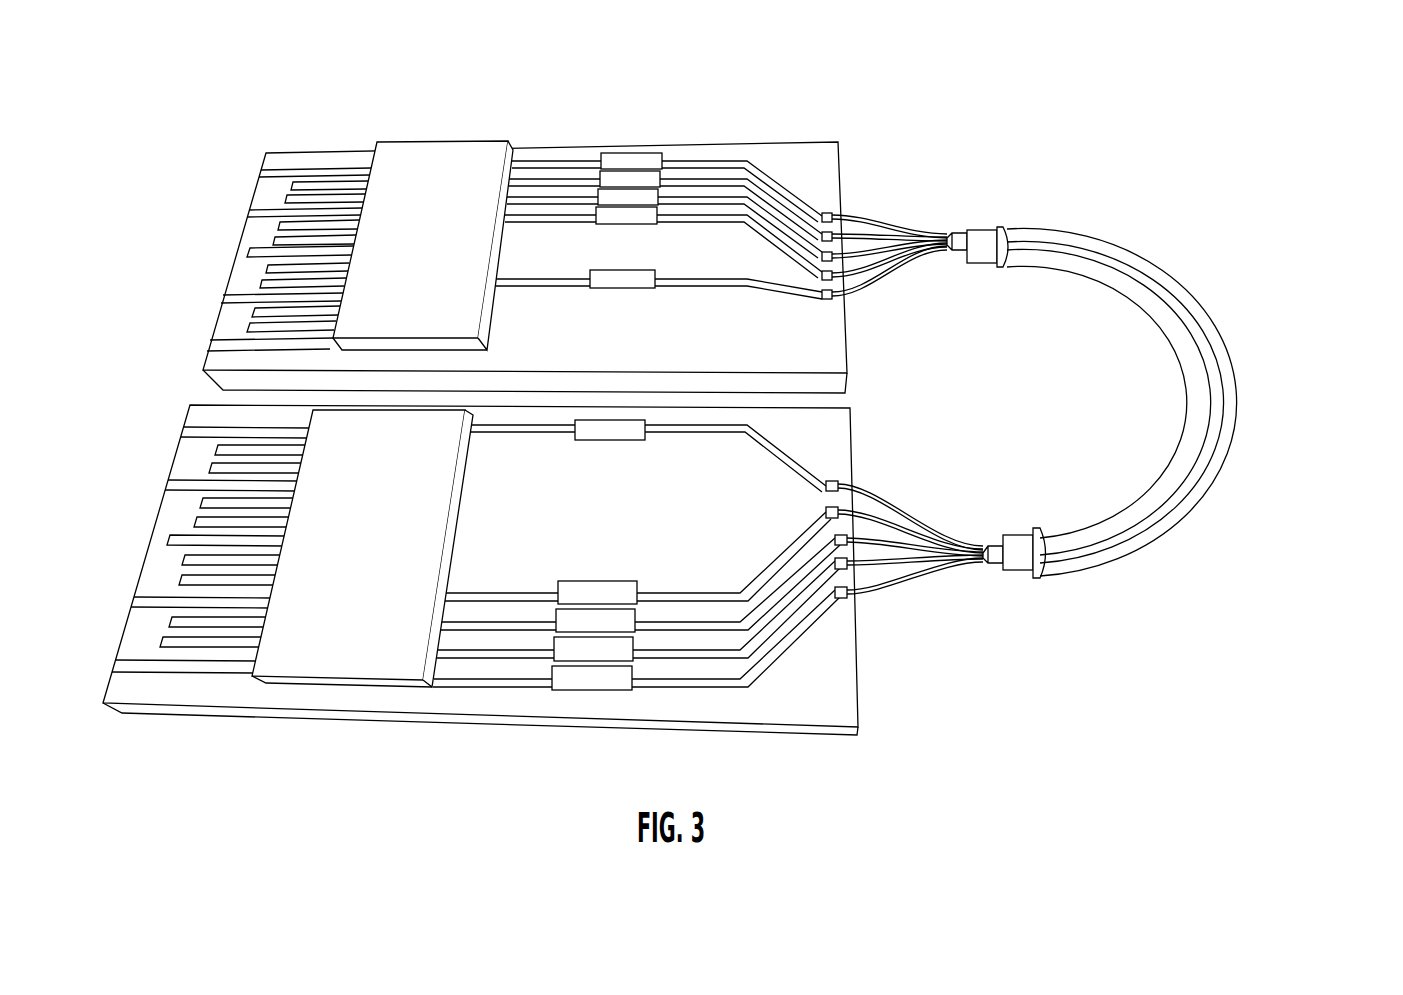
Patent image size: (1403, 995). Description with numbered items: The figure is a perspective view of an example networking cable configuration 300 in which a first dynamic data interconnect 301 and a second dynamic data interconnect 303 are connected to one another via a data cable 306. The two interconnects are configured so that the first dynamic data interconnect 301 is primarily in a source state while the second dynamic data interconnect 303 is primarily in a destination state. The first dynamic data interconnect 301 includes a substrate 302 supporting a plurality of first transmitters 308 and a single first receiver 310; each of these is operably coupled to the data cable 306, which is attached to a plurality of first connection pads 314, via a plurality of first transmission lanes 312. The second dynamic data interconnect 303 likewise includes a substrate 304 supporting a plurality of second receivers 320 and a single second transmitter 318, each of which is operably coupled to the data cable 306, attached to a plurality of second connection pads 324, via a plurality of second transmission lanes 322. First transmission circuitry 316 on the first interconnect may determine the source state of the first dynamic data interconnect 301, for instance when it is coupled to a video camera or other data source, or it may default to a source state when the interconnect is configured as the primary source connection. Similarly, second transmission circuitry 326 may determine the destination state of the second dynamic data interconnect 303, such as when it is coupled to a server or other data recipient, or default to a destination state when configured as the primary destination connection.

The networking cable configuration 300 is at (1332, 113).
The first dynamic data interconnect 301 is at (195, 210).
The substrate 302 is at (270, 149).
The second dynamic data interconnect 303 is at (137, 432).
The substrate 304 is at (131, 572).
The data cable 306 is at (1229, 311).
The first transmitters 308 is at (597, 206).
The first receiver 310 is at (600, 292).
The first transmission lanes 312 is at (722, 208).
The first connection pads 314 is at (819, 270).
The first transmission circuitry 316 is at (402, 149).
The second transmitter 318 is at (571, 425).
The second receivers 320 is at (550, 666).
The second transmission lanes 322 is at (675, 435).
The second connection pads 324 is at (830, 479).
The second transmission circuitry 326 is at (329, 671).